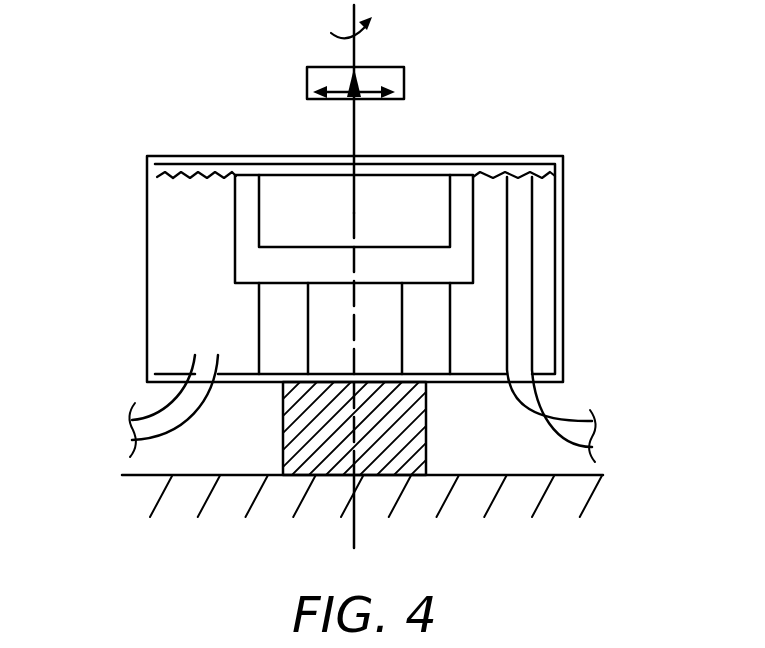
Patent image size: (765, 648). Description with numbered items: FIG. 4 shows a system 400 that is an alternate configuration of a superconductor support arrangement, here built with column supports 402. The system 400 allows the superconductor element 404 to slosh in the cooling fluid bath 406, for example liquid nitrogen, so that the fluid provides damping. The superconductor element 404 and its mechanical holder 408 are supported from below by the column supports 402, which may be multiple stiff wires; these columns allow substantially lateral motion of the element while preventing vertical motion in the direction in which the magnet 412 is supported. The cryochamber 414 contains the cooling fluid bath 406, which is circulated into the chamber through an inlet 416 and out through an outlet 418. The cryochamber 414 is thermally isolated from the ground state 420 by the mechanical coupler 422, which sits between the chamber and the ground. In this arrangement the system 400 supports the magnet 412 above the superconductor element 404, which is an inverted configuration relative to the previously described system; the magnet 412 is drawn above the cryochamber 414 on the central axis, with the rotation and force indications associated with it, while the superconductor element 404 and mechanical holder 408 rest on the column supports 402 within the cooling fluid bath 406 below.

The system 400 is at (556, 60).
The column supports 402 is at (238, 333).
The superconductor element 404 is at (403, 182).
The cooling fluid bath 406 is at (163, 302).
The mechanical holder 408 is at (465, 197).
The magnet 412 is at (318, 98).
The cryochamber 414 is at (145, 244).
The inlet 416 is at (118, 432).
The outlet 418 is at (646, 435).
The ground state 420 is at (138, 477).
The mechanical coupler 422 is at (377, 468).